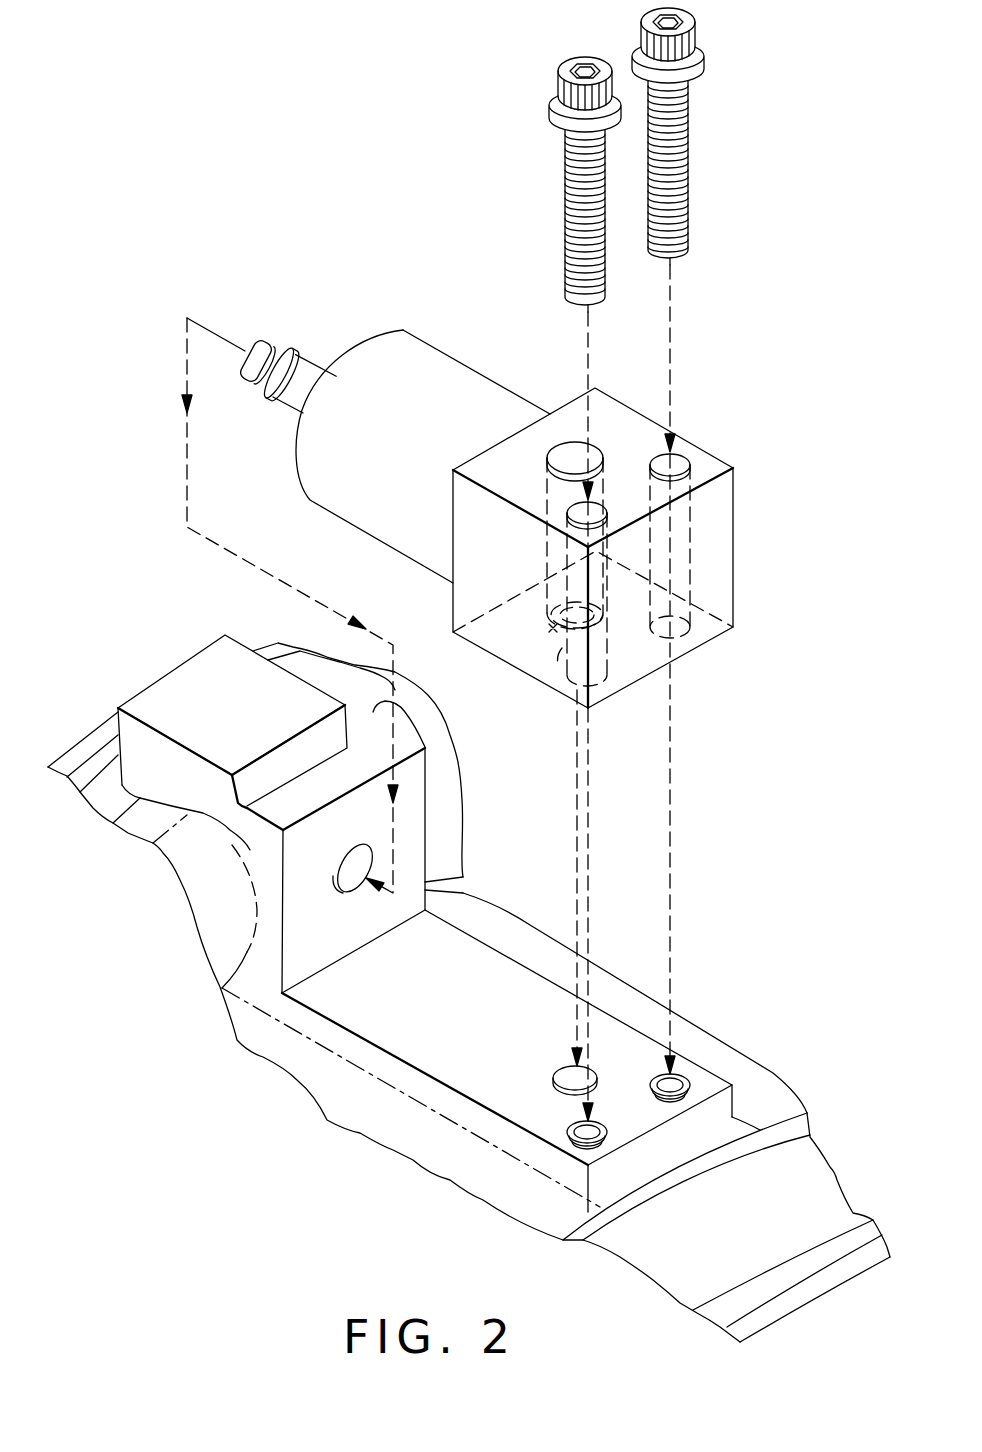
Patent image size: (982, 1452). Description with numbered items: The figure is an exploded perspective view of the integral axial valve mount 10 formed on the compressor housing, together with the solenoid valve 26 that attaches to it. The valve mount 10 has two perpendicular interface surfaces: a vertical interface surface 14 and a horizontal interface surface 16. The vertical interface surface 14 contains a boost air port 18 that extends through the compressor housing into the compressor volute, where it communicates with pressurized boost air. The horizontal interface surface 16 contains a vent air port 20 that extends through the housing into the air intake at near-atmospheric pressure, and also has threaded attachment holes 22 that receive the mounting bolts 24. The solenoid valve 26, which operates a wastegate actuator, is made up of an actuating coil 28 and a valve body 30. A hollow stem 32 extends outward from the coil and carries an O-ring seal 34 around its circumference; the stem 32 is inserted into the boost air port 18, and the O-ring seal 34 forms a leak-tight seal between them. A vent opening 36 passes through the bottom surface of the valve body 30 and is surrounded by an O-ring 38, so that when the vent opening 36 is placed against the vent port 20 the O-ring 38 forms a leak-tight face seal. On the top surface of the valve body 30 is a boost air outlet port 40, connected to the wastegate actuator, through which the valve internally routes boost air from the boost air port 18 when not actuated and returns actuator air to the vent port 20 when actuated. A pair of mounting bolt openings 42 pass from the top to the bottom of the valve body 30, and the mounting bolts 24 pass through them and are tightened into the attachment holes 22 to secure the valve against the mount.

The axial valve mount 10 is at (447, 789).
The vertical interface surface 14 is at (292, 862).
The horizontal interface surface 16 is at (392, 1003).
The boost air port 18 is at (345, 895).
The vent air port 20 is at (562, 1072).
The attachment holes 22 is at (669, 1095).
The mounting bolts 24 is at (642, 20).
The solenoid valve 26 is at (400, 556).
The actuating coil 28 is at (398, 355).
The valve body 30 is at (709, 516).
The hollow stem 32 is at (261, 343).
The O-ring seal 34 is at (291, 350).
The vent opening 36 is at (560, 650).
The O-ring 38 is at (548, 629).
The boost air outlet port 40 is at (551, 450).
The mounting bolt openings 42 is at (568, 508).